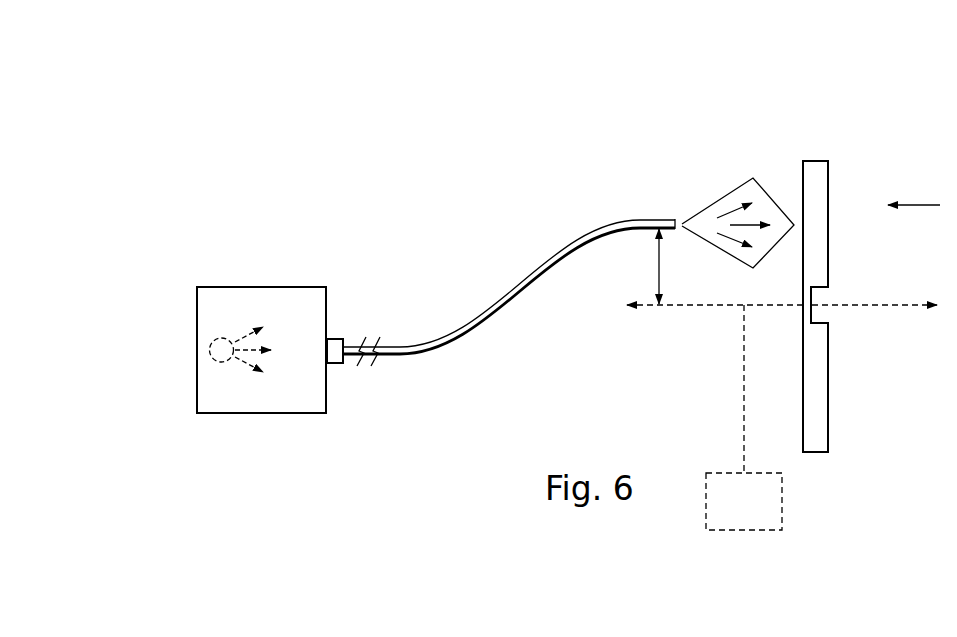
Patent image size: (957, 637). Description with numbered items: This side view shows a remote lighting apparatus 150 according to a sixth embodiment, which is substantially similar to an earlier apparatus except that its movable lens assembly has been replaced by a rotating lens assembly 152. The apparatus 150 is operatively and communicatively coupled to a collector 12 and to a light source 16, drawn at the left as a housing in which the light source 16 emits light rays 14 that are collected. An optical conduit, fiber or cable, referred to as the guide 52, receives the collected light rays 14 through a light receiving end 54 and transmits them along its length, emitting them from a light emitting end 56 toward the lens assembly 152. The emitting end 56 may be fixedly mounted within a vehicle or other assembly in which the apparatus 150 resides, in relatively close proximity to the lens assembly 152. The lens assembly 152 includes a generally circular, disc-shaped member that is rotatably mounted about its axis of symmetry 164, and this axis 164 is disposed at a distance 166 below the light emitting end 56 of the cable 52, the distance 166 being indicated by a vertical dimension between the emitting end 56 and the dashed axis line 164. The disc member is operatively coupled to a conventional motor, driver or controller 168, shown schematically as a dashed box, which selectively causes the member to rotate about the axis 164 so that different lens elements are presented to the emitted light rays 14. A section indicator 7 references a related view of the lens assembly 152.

The remote lighting apparatus 150 is at (470, 124).
The collector 12 is at (297, 287).
The light source 16 is at (209, 349).
The light rays 14 is at (248, 362).
The light receiving end 54 is at (344, 346).
The optical guide 52 is at (496, 303).
The light emitting end 56 is at (683, 218).
The rotating lens assembly 152 is at (831, 161).
The direction of movement 7 is at (922, 205).
The axis of symmetry 164 is at (900, 304).
The distance 166 is at (655, 265).
The motor/driver/controller 168 is at (762, 512).